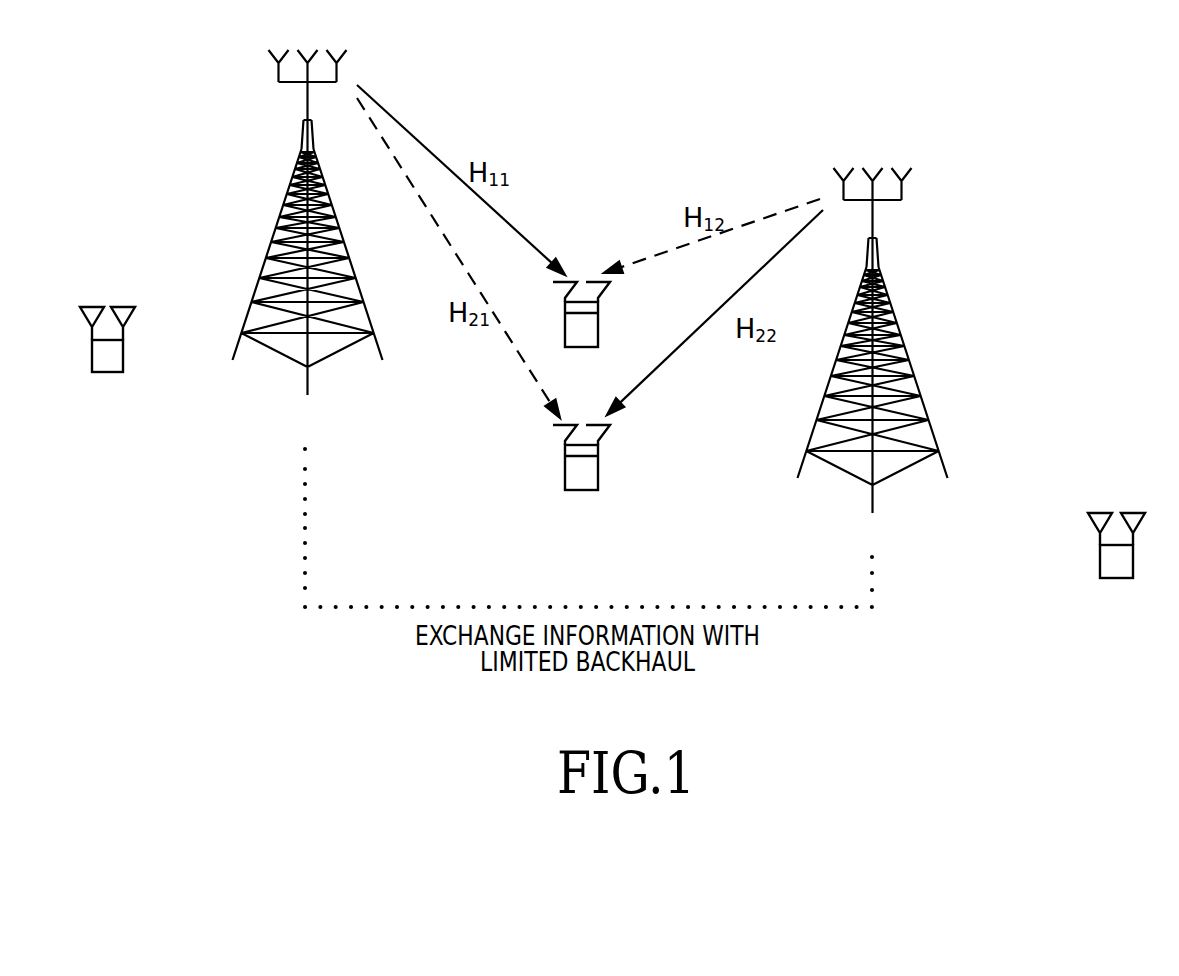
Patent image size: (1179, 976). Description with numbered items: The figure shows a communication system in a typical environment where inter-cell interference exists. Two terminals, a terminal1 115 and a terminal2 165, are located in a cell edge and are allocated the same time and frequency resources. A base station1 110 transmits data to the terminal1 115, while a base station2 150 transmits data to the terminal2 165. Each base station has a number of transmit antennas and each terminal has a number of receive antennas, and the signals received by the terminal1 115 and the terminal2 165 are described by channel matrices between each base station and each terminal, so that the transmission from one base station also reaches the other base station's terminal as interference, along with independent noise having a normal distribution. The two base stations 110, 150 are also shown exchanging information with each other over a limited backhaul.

The base station1 110 is at (250, 310).
The base station2 150 is at (936, 432).
The terminal1 115 is at (607, 330).
The terminal2 165 is at (608, 475).